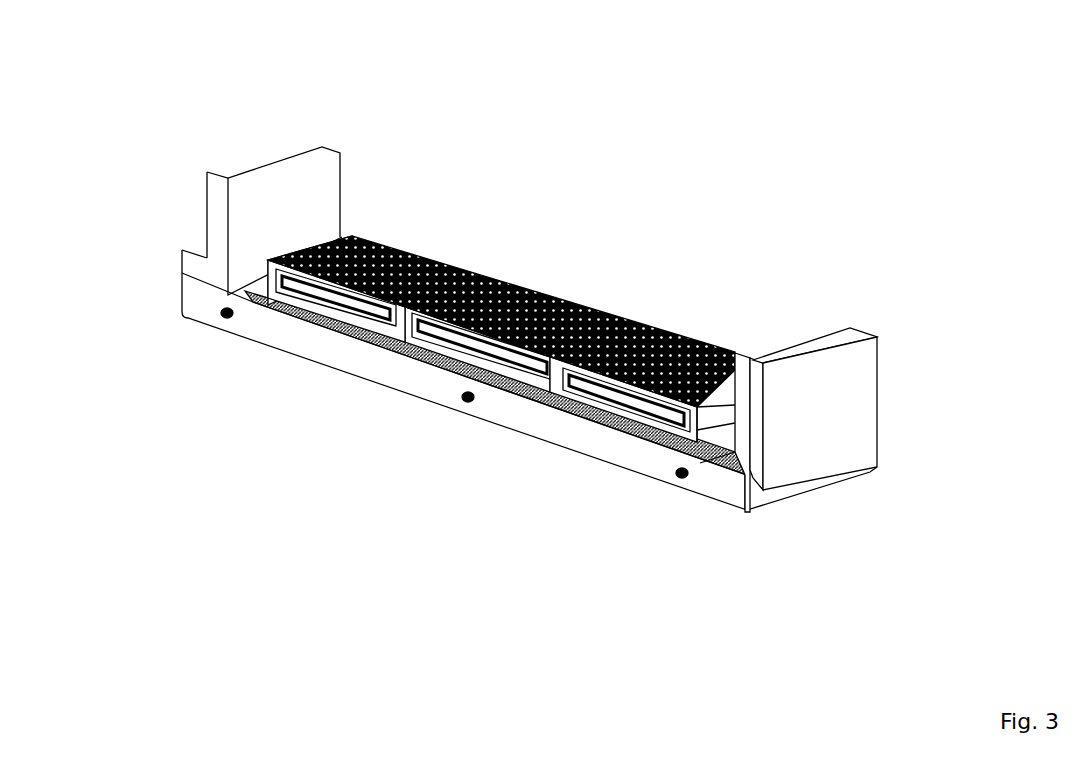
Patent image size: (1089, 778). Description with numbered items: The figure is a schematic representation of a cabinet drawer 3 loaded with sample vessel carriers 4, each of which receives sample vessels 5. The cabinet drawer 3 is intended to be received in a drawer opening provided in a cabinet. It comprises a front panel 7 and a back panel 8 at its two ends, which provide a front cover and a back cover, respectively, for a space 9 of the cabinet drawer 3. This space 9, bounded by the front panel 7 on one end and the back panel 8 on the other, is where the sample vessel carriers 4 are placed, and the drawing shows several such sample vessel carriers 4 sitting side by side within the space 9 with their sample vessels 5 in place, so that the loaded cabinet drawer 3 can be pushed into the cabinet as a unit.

The cabinet drawer 3 is at (532, 423).
The sample vessel carriers 4 is at (338, 312).
The sample vessels 5 is at (663, 345).
The front panel 7 is at (841, 367).
The back panel 8 is at (288, 190).
The space 9 is at (535, 288).